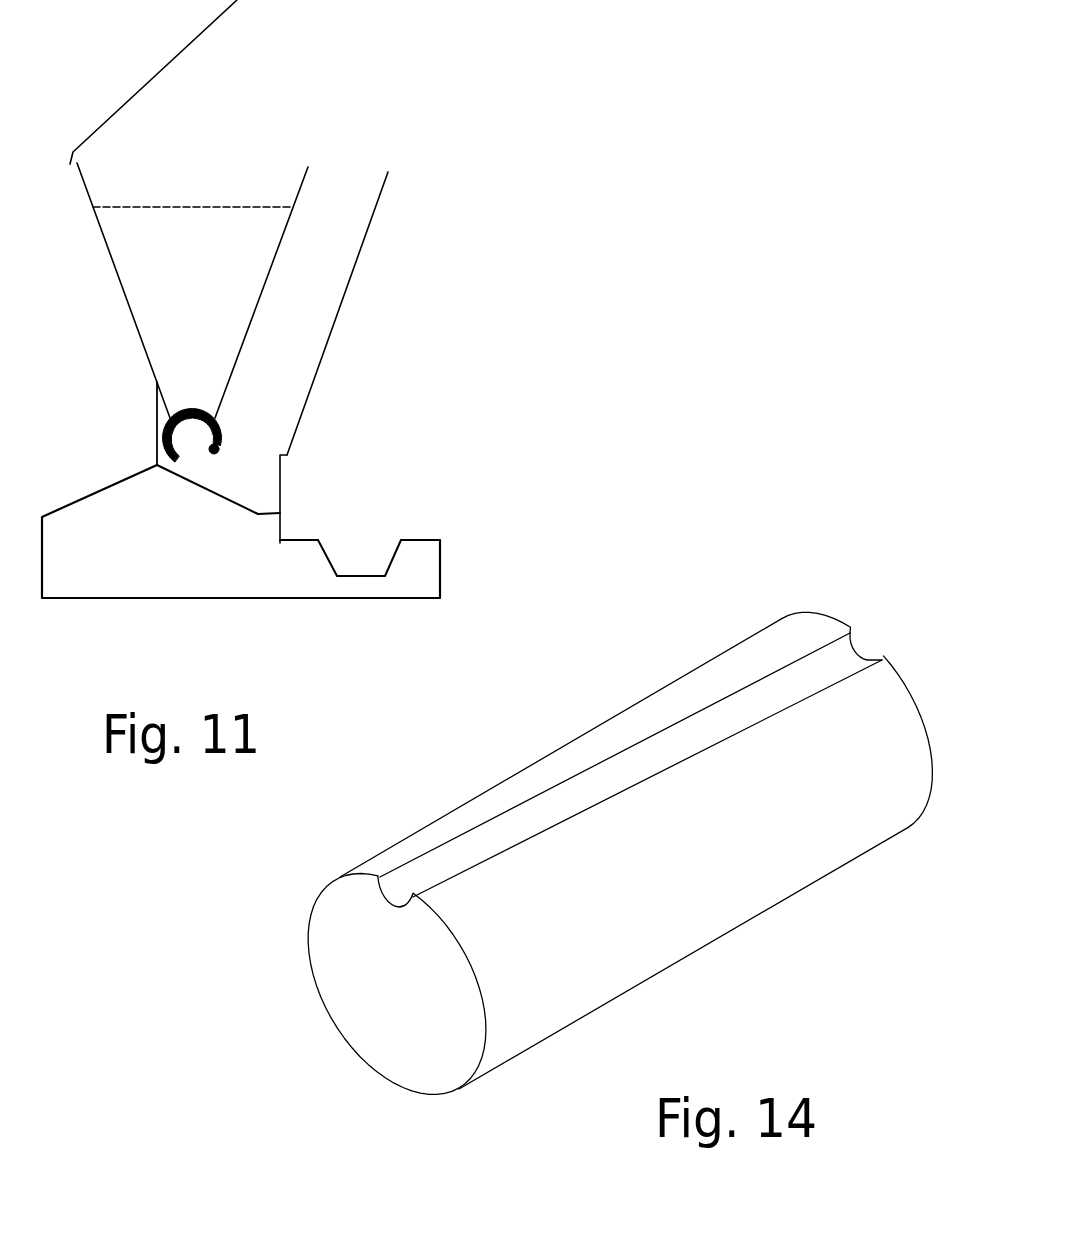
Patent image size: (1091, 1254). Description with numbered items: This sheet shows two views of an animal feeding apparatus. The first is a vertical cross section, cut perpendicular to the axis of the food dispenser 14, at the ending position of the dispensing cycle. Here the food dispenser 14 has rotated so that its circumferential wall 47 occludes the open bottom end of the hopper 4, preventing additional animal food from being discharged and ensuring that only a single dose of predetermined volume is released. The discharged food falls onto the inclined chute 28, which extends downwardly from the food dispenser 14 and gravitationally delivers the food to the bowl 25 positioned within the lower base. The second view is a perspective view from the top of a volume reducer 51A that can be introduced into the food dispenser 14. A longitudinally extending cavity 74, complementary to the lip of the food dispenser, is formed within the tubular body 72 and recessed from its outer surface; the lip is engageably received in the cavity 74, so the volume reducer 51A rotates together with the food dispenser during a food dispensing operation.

In FIG. 11, the hopper 4 is at (130, 310).
In FIG. 11, the circumferential wall 47 is at (163, 443).
In FIG. 11, the food dispenser 14 is at (222, 428).
In FIG. 11, the inclined chute 28 is at (217, 493).
In FIG. 11, the bowl 25 is at (397, 553).
In FIG. 14, the volume reducer 51A is at (634, 792).
In FIG. 14, the tubular body 72 is at (820, 837).
In FIG. 14, the longitudinally extending cavity 74 is at (550, 808).